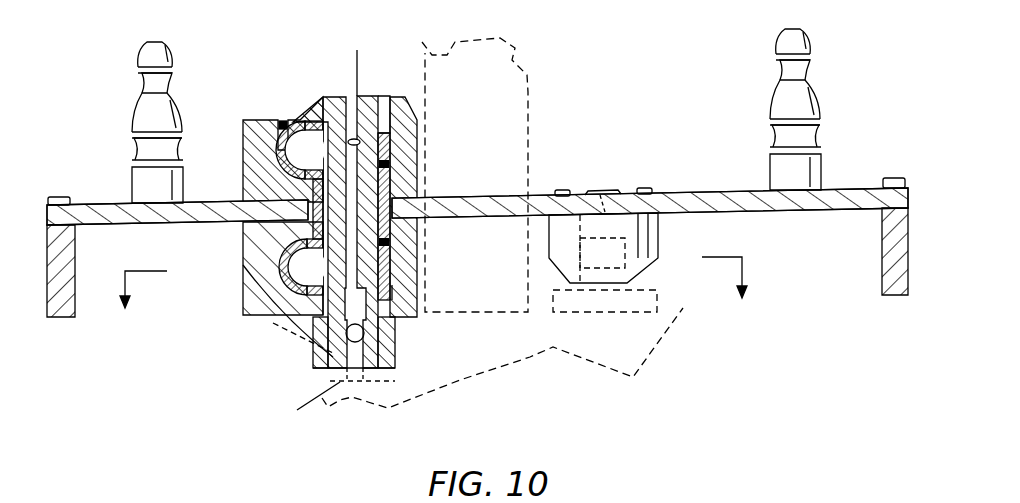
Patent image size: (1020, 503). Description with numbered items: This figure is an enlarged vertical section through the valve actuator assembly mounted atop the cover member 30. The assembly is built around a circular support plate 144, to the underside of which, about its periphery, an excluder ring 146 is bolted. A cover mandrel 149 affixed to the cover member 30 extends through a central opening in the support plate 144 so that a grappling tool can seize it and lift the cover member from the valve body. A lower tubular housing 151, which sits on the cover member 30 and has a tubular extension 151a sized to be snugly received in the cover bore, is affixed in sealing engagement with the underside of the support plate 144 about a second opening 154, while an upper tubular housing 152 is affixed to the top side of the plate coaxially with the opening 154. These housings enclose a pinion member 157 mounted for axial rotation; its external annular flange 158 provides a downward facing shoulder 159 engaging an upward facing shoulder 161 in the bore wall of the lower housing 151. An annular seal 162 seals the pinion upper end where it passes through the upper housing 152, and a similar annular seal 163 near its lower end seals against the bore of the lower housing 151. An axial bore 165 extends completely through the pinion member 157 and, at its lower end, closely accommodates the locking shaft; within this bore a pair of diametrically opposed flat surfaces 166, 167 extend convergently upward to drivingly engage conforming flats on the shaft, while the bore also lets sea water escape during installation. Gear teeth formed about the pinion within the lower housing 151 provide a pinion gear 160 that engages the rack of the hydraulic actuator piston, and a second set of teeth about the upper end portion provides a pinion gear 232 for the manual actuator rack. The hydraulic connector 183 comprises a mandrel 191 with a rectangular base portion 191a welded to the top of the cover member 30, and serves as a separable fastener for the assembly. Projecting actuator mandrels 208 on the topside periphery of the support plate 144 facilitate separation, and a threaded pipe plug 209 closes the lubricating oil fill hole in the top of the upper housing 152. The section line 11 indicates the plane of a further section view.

The section line 11- 11 is at (437, 296).
The cover member 30 is at (632, 347).
The support plate 144 is at (107, 204).
The excluder ring 146 is at (882, 281).
The cover mandrel 149 is at (522, 62).
The tubular housing 151 is at (240, 315).
The tubular extension 151a is at (300, 368).
The tubular housing 152 is at (258, 117).
The second opening 154 is at (243, 241).
The pinion member 157 is at (395, 166).
The external annular flange 158 is at (245, 292).
The downward facing shoulder 159 is at (328, 333).
The pinion gear 160 is at (395, 238).
The upward facing shoulder 161 is at (395, 292).
The annular seal 162 is at (369, 62).
The annular seal 163 is at (362, 383).
The axial bore 165 is at (418, 118).
The flat surface 166 is at (298, 407).
The flat surface 167 is at (395, 343).
The hydraulic connector 183 is at (662, 241).
The mandrel 191 is at (598, 193).
The rectangular base portion 191a is at (658, 300).
The actuator mandrel 208 is at (138, 58).
The threaded pipe plug 209 is at (287, 118).
The pinion gear 232 is at (360, 141).